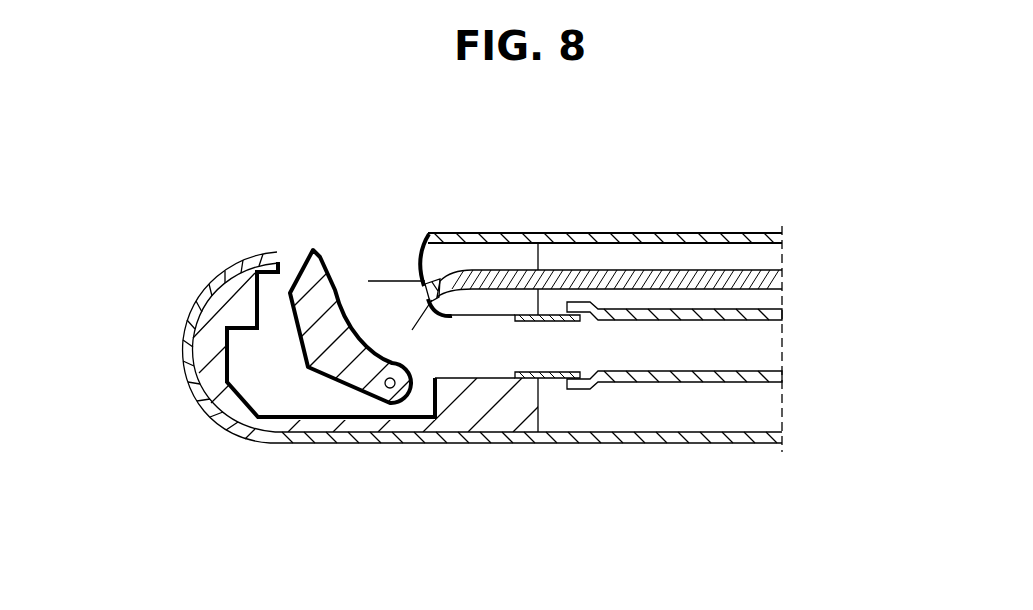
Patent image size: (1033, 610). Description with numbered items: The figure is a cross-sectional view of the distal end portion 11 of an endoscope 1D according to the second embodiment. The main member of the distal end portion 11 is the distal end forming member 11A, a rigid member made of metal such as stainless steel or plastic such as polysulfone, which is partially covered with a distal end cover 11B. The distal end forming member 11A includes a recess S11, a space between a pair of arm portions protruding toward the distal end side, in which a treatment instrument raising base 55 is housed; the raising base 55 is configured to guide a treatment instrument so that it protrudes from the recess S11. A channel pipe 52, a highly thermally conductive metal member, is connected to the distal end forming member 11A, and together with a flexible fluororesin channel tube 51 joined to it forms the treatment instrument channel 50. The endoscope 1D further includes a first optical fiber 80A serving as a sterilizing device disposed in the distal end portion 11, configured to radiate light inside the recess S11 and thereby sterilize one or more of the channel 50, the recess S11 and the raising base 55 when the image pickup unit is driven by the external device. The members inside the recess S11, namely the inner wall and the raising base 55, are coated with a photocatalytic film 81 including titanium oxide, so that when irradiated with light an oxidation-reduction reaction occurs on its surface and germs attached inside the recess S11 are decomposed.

The endoscope 1D is at (156, 202).
The distal end portion 11 is at (243, 496).
The distal end forming member 11A is at (287, 447).
The distal end cover 11B is at (357, 447).
The treatment instrument raising base 55 is at (297, 360).
The photocatalytic film 81 is at (337, 265).
The recess S11 is at (386, 236).
The first optical fiber 80A is at (677, 270).
The treatment instrument channel 50 is at (705, 517).
The channel tube 51 is at (643, 383).
The channel pipe 52 is at (548, 382).